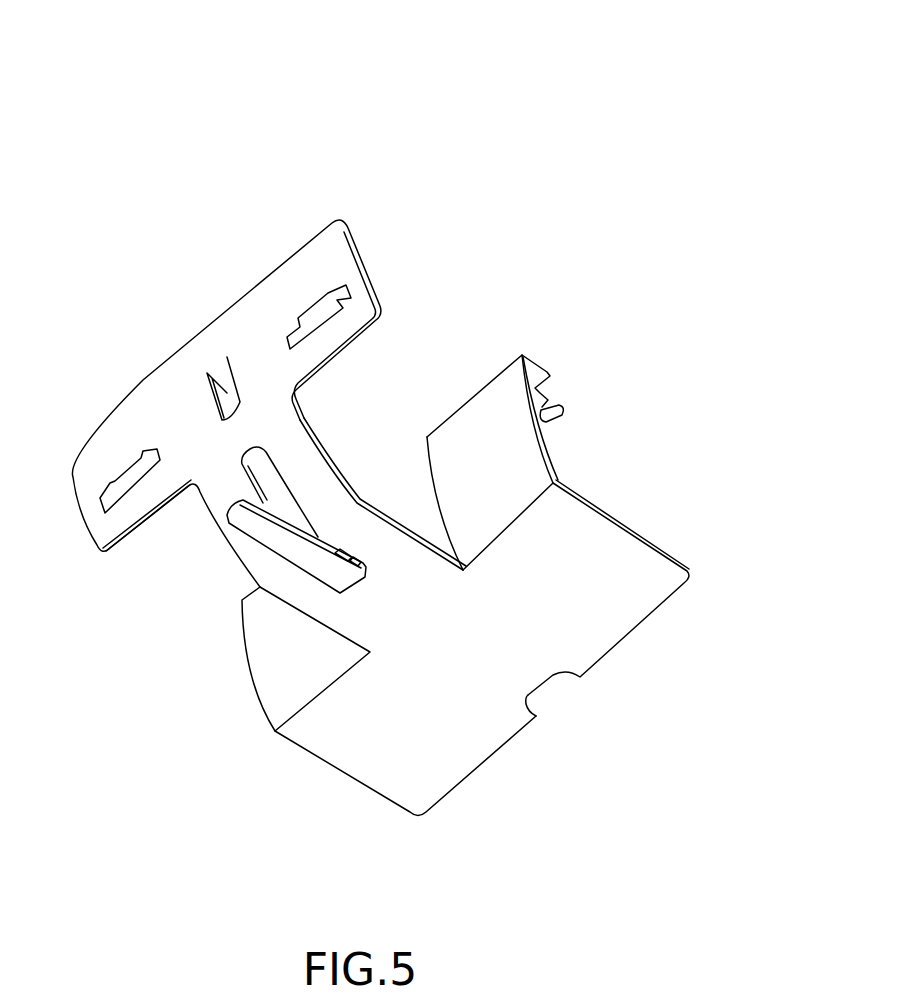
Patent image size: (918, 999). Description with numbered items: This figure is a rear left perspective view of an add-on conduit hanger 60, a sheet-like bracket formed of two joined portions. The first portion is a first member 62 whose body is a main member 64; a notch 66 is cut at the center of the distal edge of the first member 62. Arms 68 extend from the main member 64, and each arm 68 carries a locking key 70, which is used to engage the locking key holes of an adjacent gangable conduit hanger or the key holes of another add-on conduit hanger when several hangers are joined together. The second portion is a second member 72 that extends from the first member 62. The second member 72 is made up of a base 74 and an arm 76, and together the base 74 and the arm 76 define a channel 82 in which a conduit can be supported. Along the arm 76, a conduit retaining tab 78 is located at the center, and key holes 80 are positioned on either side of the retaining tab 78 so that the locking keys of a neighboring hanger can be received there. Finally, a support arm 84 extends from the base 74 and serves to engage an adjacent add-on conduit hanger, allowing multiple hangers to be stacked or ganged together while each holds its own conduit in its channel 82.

The add-on conduit hanger 60 is at (178, 123).
The first member 62 is at (663, 550).
The main member 64 is at (582, 560).
The notch 66 is at (545, 692).
The arms 68 is at (520, 478).
The locking key 70 is at (562, 417).
The second member 72 is at (357, 497).
The base 74 is at (362, 623).
The arm 76 is at (222, 496).
The conduit retaining tab 78 is at (227, 393).
The key holes 80 is at (137, 477).
The channel 82 is at (388, 498).
The support arm 84 is at (252, 523).